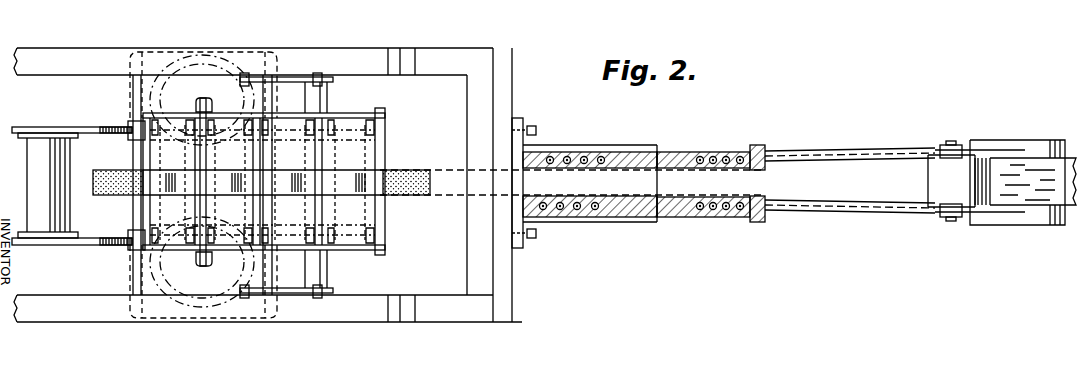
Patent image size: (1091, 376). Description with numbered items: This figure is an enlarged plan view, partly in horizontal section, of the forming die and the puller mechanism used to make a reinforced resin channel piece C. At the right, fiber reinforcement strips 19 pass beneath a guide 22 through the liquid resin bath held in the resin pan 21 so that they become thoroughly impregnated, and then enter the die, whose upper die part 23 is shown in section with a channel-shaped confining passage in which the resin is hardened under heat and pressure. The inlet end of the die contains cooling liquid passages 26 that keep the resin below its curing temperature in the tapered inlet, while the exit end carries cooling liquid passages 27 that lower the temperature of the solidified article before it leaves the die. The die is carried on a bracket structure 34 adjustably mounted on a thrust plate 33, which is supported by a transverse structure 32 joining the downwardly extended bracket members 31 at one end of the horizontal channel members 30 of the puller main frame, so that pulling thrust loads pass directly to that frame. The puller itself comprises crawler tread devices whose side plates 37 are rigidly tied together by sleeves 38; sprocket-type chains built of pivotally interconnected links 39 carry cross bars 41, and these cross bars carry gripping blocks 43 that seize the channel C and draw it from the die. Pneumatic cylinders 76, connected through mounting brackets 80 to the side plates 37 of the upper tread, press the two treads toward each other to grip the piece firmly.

The fiber reinforcement strips 19 is at (1038, 158).
The resin pan 21 is at (840, 214).
The guide 22 is at (928, 168).
The upper die part 23 is at (674, 152).
The cooling liquid passages 26 is at (712, 152).
The cooling liquid passages 27 is at (578, 210).
The horizontal channel members 30 is at (352, 48).
The bracket members 31 is at (453, 48).
The transverse structure 32 is at (467, 254).
The thrust plate 33 is at (505, 98).
The bracket structure 34 is at (598, 222).
The side plates 37 is at (76, 127).
The sleeves 38 is at (27, 182).
The links 39 is at (128, 122).
The cross bars 41 is at (150, 220).
The gripping blocks 43 is at (165, 188).
The cylinders 76 is at (164, 60).
The mounting brackets 80 is at (197, 107).
The channel piece C is at (106, 170).